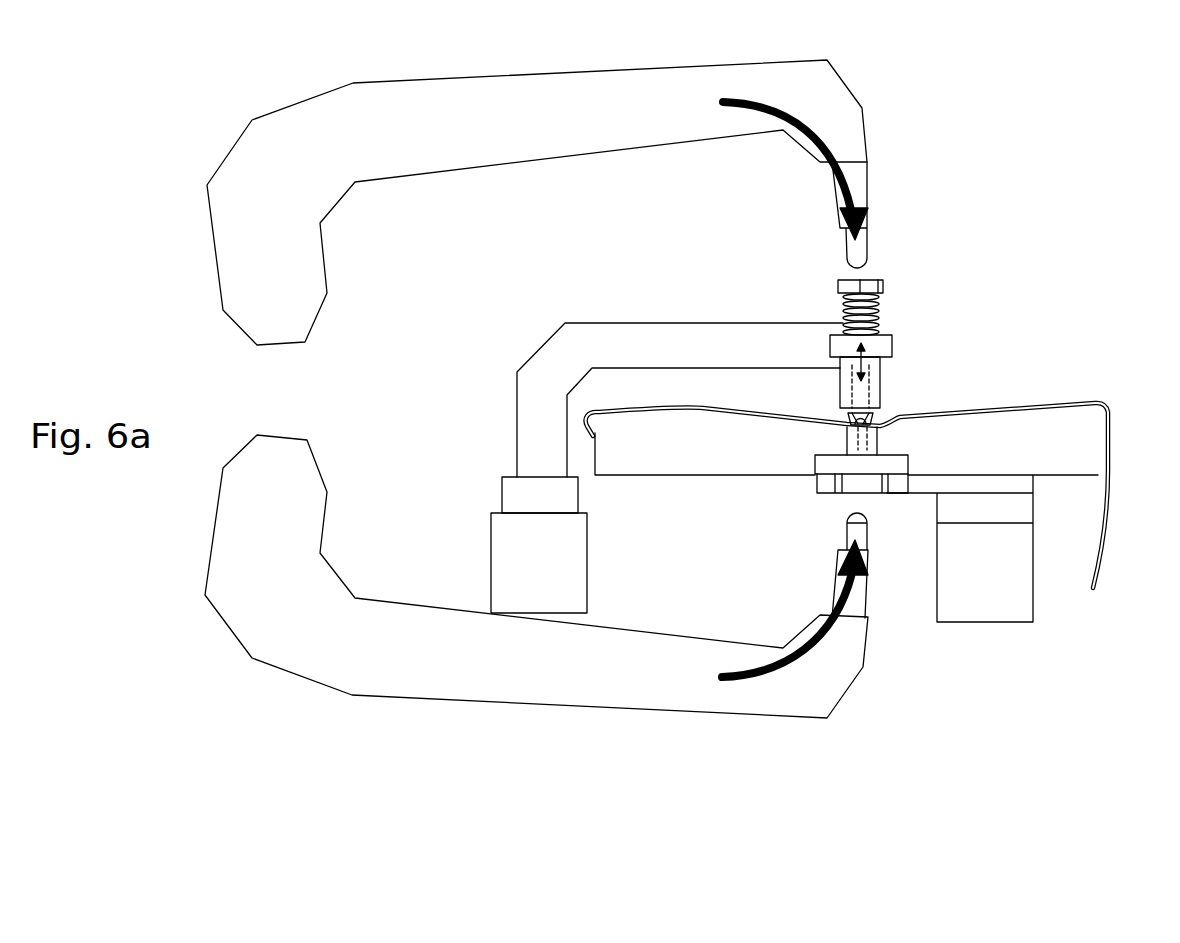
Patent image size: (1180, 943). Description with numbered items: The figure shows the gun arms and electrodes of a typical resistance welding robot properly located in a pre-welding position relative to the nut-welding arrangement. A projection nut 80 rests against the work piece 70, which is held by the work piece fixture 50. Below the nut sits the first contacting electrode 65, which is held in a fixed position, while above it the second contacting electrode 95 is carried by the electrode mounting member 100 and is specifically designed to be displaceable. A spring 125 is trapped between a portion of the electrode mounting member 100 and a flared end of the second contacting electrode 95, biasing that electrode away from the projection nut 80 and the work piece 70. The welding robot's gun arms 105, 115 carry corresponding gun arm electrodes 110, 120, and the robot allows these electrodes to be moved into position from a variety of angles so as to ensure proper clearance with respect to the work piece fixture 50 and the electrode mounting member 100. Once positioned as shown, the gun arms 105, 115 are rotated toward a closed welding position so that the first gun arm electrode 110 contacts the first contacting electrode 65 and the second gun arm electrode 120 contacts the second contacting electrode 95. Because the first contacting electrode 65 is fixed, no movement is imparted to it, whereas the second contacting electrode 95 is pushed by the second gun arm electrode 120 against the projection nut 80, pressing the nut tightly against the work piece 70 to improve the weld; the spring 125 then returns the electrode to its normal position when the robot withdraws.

The work piece fixture 50 is at (1130, 446).
The first contacting electrode 65 is at (853, 487).
The work piece 70 is at (1007, 410).
The projection nut 80 is at (877, 422).
The second contacting electrode 95 is at (877, 380).
The electrode mounting member 100 is at (522, 338).
The first gun arm 105 is at (540, 693).
The first gun arm electrode 110 is at (857, 593).
The second gun arm 115 is at (557, 76).
The second gun arm electrode 120 is at (870, 212).
The spring 125 is at (840, 307).